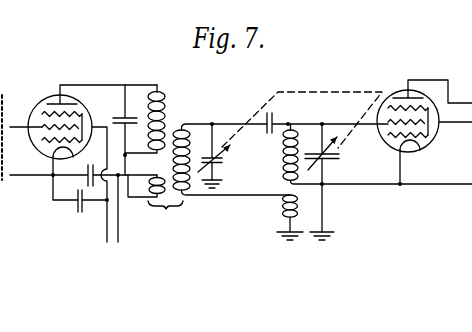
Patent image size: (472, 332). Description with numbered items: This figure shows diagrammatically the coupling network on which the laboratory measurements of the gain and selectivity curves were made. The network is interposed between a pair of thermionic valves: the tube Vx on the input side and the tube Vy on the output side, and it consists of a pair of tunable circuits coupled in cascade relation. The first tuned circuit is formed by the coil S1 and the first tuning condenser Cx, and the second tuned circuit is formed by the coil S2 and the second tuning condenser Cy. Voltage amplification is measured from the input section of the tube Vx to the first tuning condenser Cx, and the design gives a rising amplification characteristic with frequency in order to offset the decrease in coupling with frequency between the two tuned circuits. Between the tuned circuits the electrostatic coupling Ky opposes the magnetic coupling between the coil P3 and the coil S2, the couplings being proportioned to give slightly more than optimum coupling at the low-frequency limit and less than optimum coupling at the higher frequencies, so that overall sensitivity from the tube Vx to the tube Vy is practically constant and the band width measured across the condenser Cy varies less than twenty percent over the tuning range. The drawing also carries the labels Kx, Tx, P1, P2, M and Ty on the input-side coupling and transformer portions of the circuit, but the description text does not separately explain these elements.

The tube Vx is at (47, 99).
The coupling condenser Kx is at (119, 113).
The transmitting transformer Tx is at (207, 140).
The primary coil P1 is at (153, 140).
The first tuned circuit coil S1 is at (231, 159).
The feedback coil P2 is at (146, 186).
The mutual inductance M is at (165, 212).
The first tuning condenser Cx is at (222, 155).
The electrostatic coupling Ky is at (275, 120).
The receiving transformer Ty is at (361, 182).
The second tuned circuit coil S2 is at (282, 143).
The magnetic coupling coil P3 is at (281, 211).
The second tuning condenser Cy is at (330, 182).
The tube Vy is at (394, 87).